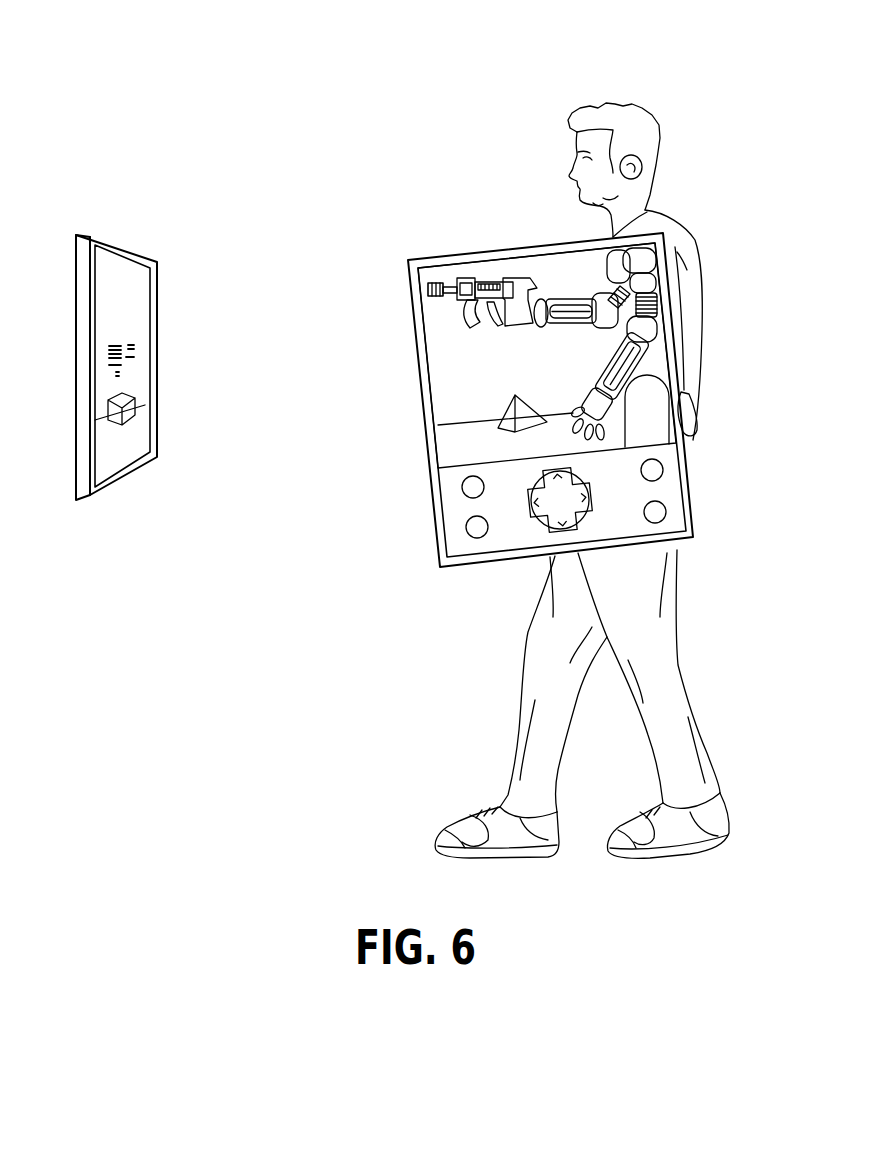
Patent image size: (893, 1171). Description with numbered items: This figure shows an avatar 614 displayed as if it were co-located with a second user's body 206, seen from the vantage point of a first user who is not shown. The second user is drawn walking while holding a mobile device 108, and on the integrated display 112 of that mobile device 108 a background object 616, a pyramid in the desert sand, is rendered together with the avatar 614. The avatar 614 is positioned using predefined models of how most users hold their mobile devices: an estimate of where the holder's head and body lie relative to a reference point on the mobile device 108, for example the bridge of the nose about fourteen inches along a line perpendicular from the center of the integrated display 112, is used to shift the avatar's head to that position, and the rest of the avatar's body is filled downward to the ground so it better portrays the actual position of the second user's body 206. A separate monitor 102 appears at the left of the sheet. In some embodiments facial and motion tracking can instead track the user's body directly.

The display monitor 102 is at (101, 234).
The mobile device 108 is at (457, 253).
The integrated display 112 is at (413, 307).
The second user's body 206 is at (598, 103).
The avatar 614 is at (610, 350).
The background object 616 is at (528, 400).